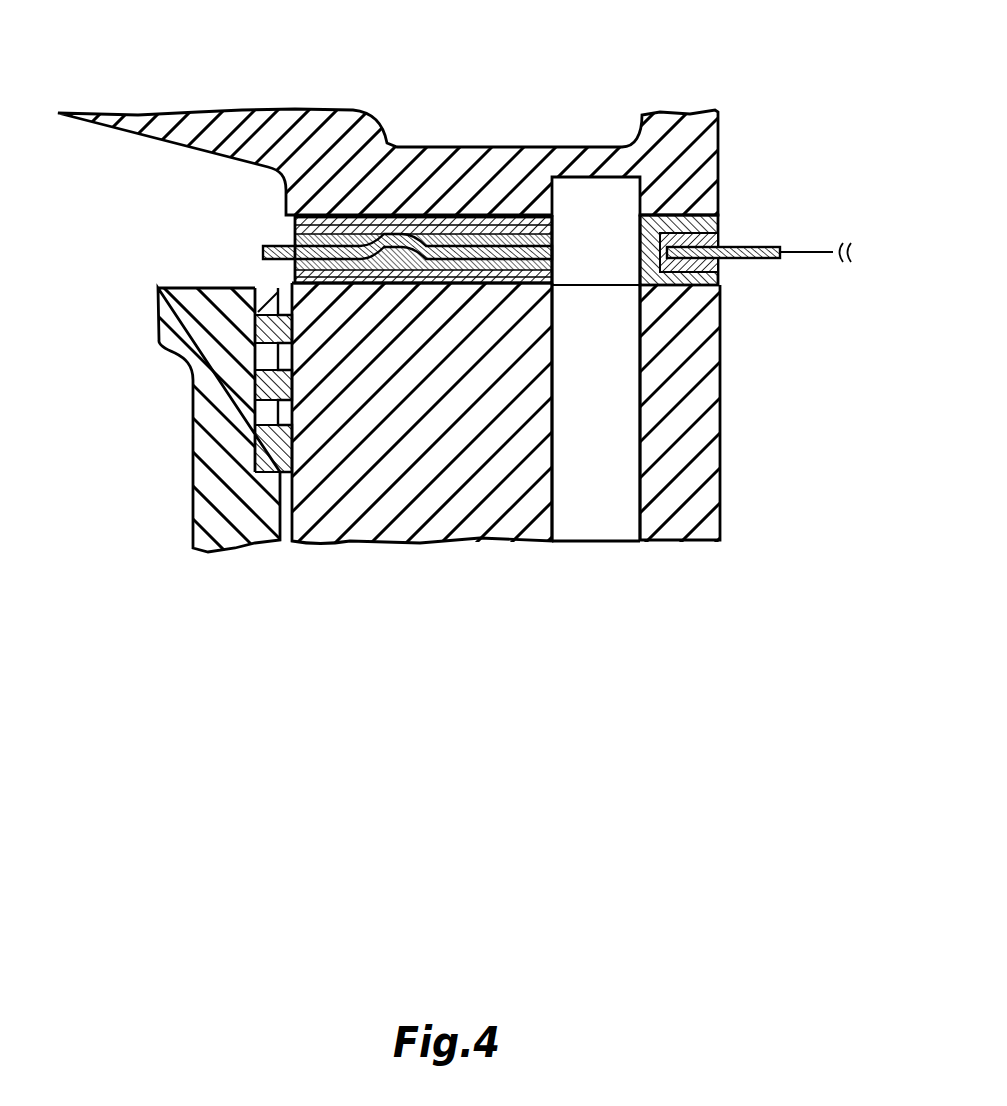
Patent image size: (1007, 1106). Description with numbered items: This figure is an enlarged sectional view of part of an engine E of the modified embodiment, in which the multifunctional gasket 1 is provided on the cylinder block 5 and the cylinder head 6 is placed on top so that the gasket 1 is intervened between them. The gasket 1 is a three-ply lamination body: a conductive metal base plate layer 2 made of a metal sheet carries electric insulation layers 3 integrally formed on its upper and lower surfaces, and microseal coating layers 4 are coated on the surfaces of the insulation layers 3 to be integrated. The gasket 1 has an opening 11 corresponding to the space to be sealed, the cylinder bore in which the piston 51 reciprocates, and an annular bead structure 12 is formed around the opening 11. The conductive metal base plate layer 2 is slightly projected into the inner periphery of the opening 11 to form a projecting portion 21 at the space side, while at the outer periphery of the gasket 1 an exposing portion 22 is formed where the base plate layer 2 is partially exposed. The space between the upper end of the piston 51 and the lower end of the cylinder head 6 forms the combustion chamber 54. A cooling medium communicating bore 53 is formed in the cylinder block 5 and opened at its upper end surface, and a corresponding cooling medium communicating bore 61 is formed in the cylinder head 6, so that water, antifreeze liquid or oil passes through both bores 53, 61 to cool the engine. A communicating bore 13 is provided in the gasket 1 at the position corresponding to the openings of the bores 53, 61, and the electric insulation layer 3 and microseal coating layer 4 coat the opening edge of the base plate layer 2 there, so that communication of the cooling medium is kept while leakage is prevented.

The multifunctional gasket 1 is at (370, 160).
The conductive metal base plate layer 2 is at (392, 222).
The electric insulation layer 3 is at (475, 243).
The microseal coating layer 4 is at (513, 257).
The cylinder block 5 is at (368, 523).
The cylinder head 6 is at (710, 115).
The opening 11 is at (280, 230).
The annular bead structure 12 is at (290, 283).
The communicating bore 13 is at (603, 268).
The projecting portion 21 is at (263, 252).
The exposing portion 22 is at (745, 263).
The piston 51 is at (217, 453).
The cooling medium communicating bore 53 is at (600, 520).
The combustion chamber 54 is at (202, 163).
The cooling medium communicating bore 61 is at (598, 197).
The engine E is at (174, 366).